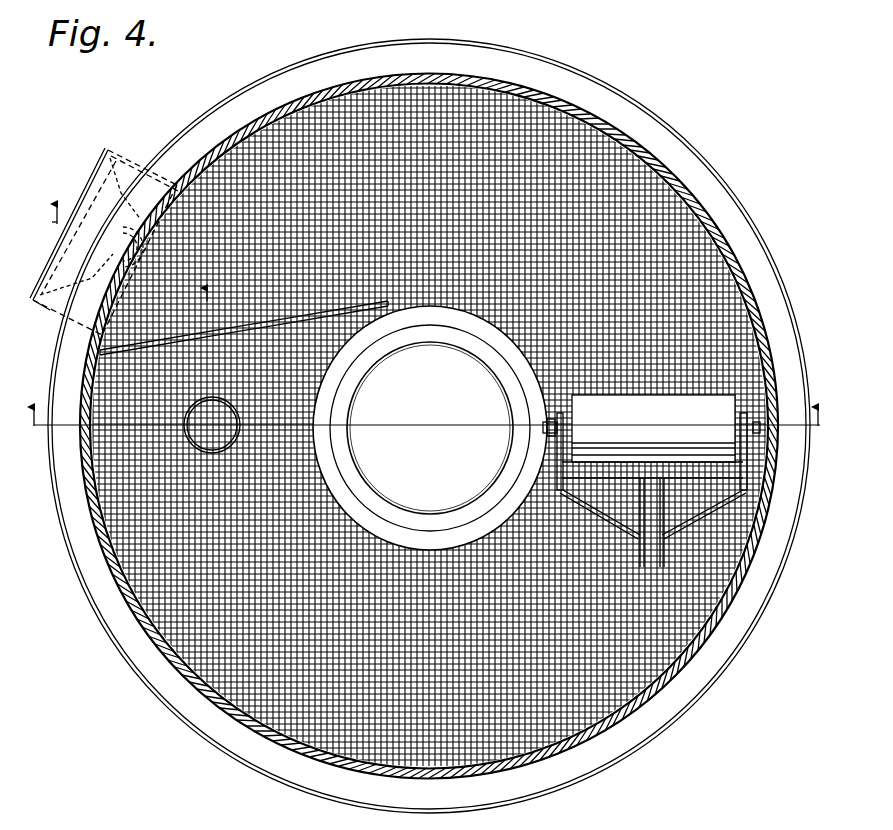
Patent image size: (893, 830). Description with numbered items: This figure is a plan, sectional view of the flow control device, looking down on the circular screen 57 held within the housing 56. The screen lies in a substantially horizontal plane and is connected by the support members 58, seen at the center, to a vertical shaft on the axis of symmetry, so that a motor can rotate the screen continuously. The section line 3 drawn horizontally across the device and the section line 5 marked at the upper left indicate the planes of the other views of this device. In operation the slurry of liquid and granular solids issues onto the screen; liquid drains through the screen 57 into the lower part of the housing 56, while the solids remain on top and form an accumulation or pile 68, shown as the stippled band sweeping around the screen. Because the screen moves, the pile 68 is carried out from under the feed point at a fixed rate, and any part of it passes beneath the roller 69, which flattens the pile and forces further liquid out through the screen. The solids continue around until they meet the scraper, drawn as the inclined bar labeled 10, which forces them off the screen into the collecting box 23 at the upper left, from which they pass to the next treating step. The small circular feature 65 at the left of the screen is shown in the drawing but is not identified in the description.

The section line 3- 3 is at (426, 429).
The section line 5- 5 is at (122, 259).
The leveling bar 10 is at (167, 341).
The collecting box 23 is at (123, 160).
The housing 56 is at (170, 662).
The circular screen 57 is at (163, 592).
The support members 58 is at (322, 463).
The inlet opening 65 is at (186, 436).
The accumulation or pile 68 is at (317, 643).
The roller 69 is at (651, 481).